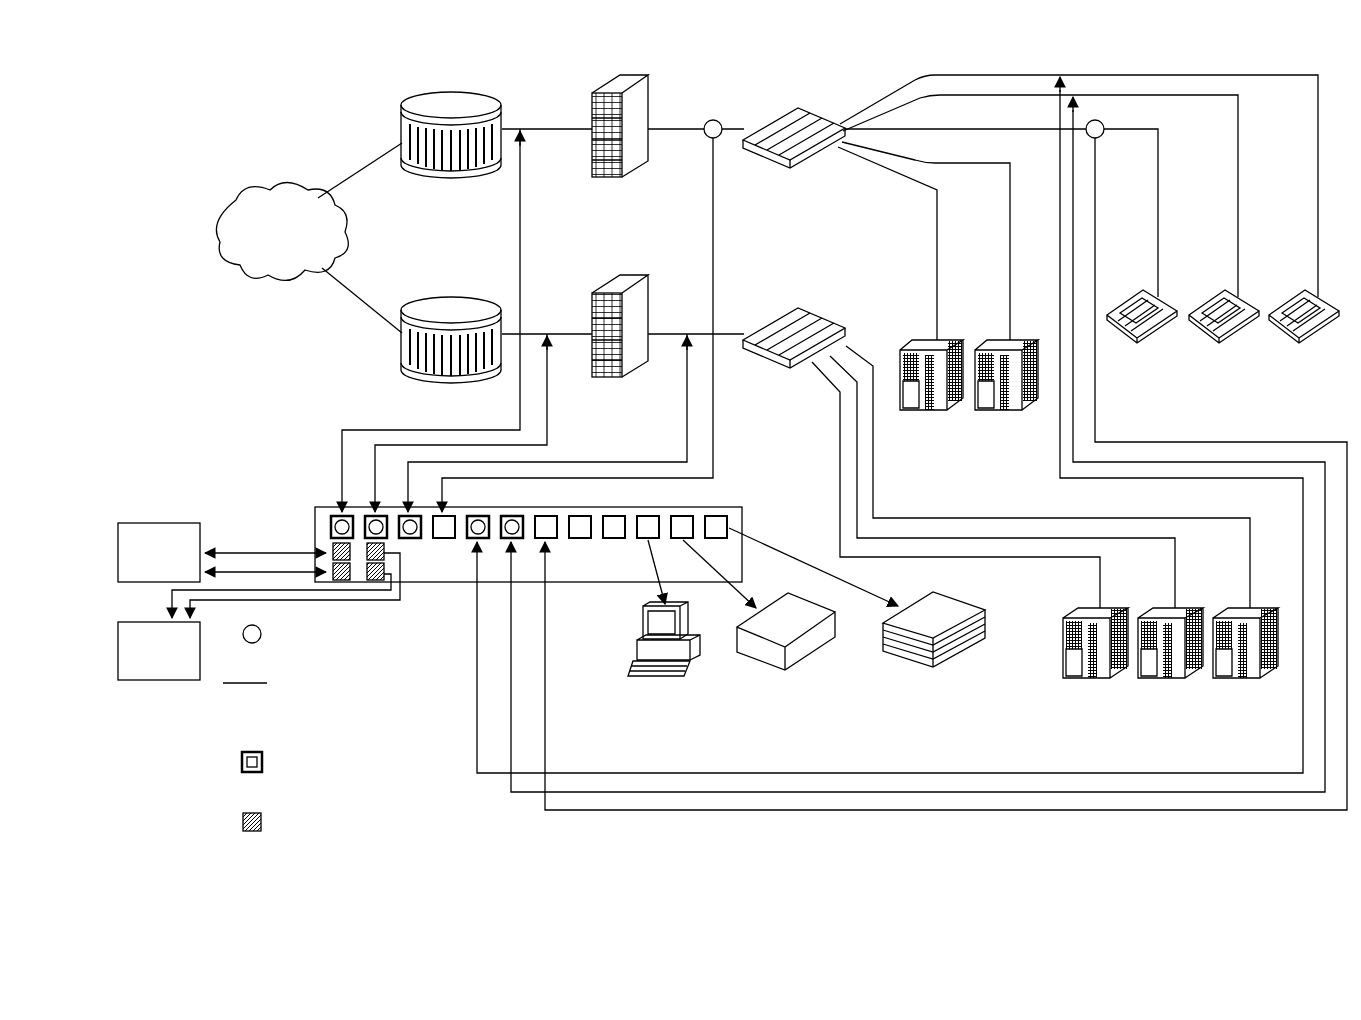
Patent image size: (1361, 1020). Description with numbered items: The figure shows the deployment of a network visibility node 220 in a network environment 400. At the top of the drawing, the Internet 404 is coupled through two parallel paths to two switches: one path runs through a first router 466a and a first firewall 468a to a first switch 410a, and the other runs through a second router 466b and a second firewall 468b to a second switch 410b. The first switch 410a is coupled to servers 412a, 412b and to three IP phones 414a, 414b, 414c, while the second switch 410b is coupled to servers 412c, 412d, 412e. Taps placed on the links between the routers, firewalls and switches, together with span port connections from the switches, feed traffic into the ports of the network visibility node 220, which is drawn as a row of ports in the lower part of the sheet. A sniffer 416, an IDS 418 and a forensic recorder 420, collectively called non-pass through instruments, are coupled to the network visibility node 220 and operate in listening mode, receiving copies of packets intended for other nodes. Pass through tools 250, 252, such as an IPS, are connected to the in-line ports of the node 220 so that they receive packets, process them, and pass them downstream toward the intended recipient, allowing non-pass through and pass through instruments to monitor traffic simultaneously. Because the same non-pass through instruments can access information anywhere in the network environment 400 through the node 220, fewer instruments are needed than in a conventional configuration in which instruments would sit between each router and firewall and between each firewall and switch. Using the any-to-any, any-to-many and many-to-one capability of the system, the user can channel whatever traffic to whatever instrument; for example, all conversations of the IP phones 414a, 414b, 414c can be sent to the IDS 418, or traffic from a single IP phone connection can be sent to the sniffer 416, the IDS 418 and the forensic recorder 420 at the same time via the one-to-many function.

The network environment 400 is at (338, 110).
The Internet 404 is at (283, 193).
The router 466a is at (453, 90).
The router 466b is at (453, 290).
The firewall 468a is at (607, 82).
The firewall 468b is at (607, 281).
The switch 410a is at (783, 113).
The switch 410b is at (783, 313).
The server 412a is at (908, 412).
The server 412b is at (1025, 412).
The server 412c is at (1077, 679).
The server 412d is at (1150, 679).
The server 412e is at (1248, 679).
The IP phone 414a is at (1135, 332).
The IP phone 414b is at (1228, 327).
The IP phone 414c is at (1315, 325).
The sniffer 416 is at (643, 622).
The IDS 418 is at (757, 663).
The forensic recorder 420 is at (890, 660).
The network visibility node 220 is at (324, 550).
The pass through tool 250 is at (152, 522).
The pass through tool 252 is at (150, 681).